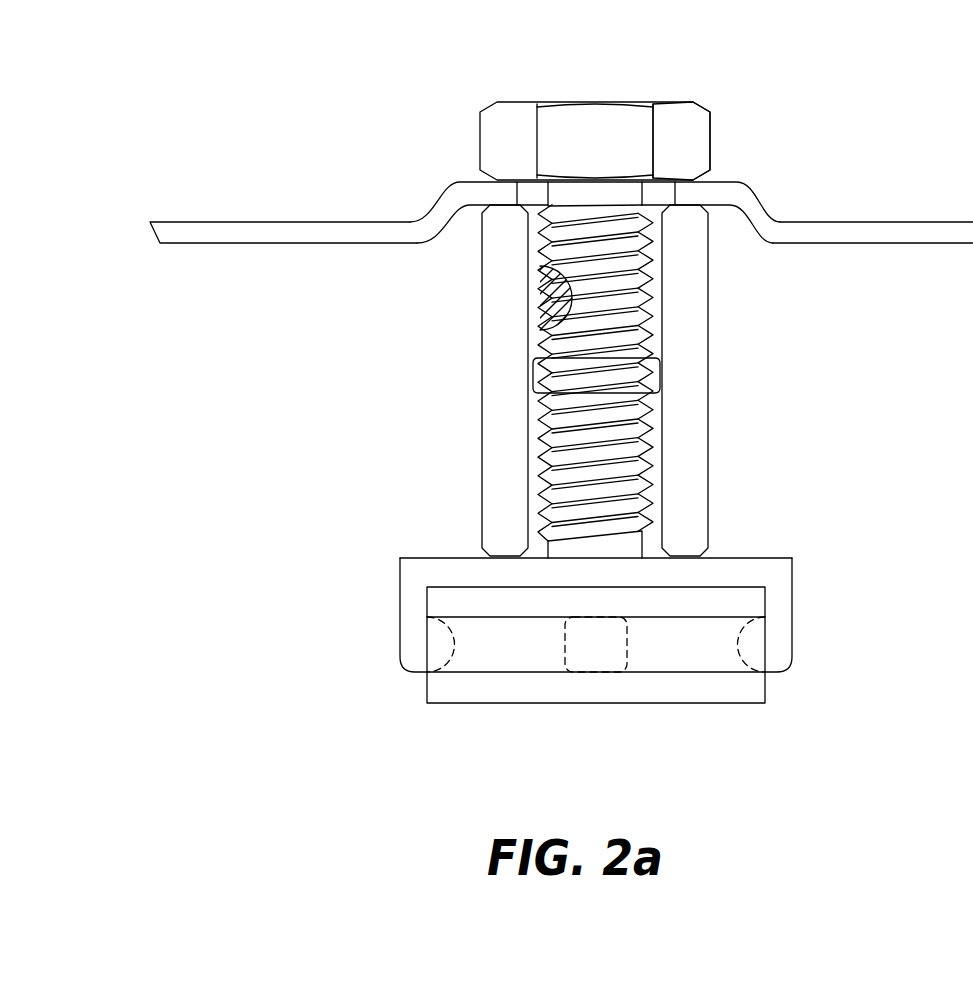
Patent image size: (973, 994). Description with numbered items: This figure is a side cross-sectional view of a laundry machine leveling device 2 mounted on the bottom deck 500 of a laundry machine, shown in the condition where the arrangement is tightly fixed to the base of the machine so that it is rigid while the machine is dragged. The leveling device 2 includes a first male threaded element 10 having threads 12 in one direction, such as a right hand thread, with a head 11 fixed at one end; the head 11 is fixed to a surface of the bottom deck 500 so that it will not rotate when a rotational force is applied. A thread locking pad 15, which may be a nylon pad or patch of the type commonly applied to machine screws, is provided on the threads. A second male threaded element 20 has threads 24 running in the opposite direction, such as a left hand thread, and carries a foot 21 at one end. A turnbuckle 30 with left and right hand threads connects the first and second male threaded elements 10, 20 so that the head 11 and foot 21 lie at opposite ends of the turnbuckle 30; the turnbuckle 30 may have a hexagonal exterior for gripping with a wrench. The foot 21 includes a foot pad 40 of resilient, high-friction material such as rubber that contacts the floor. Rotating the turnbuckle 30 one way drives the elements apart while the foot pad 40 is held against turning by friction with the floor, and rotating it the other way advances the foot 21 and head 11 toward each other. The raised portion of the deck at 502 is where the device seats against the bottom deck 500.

The laundry machine leveling device 2 is at (433, 97).
The first male threaded element 10 is at (712, 137).
The head 11 is at (700, 158).
The threads 12 is at (612, 274).
The thread locking pad 15 is at (538, 296).
The threads 24 is at (663, 478).
The turnbuckle 30 is at (713, 352).
The second male threaded element 20 is at (398, 567).
The foot 21 is at (780, 573).
The foot pad 40 is at (423, 688).
The bottom deck 500 is at (267, 222).
The raised panel portion 502 is at (747, 182).